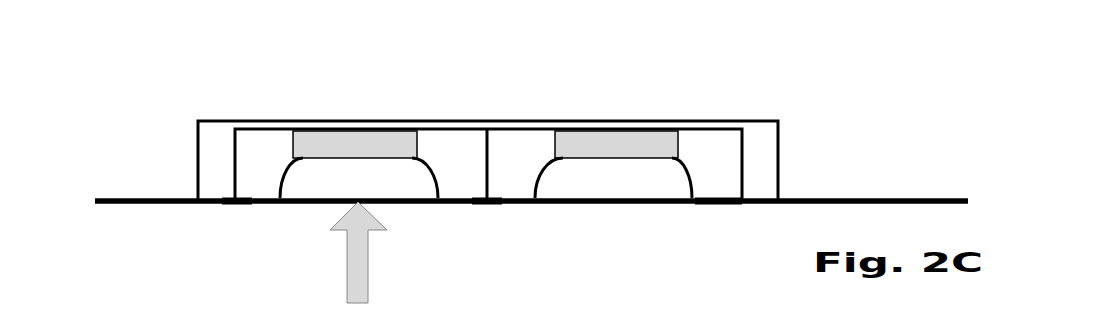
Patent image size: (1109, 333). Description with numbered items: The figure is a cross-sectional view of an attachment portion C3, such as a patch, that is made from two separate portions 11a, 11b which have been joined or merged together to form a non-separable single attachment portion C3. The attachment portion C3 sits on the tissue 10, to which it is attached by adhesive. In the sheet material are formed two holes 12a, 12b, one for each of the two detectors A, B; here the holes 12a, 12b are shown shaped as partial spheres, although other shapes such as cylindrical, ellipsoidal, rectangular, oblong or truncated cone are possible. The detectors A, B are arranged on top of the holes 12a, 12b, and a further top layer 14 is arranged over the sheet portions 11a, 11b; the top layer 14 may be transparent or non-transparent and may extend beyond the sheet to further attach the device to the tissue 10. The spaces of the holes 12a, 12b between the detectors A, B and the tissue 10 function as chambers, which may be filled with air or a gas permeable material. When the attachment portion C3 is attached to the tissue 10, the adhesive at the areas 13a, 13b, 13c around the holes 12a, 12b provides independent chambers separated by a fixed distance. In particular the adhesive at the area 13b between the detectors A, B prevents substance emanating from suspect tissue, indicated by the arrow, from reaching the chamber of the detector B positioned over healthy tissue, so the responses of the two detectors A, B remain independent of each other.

The tissue 10 is at (153, 199).
The first separate portion 11a is at (275, 145).
The second separate portion 11b is at (522, 143).
The first hole 12a is at (329, 172).
The second hole 12b is at (580, 182).
The first adhesive area 13a is at (230, 212).
The second adhesive area 13b is at (481, 213).
The third adhesive area 13c is at (722, 213).
The top layer 14 is at (447, 125).
The first detector A is at (343, 138).
The second detector B is at (640, 128).
The attachment portion C3 is at (197, 87).